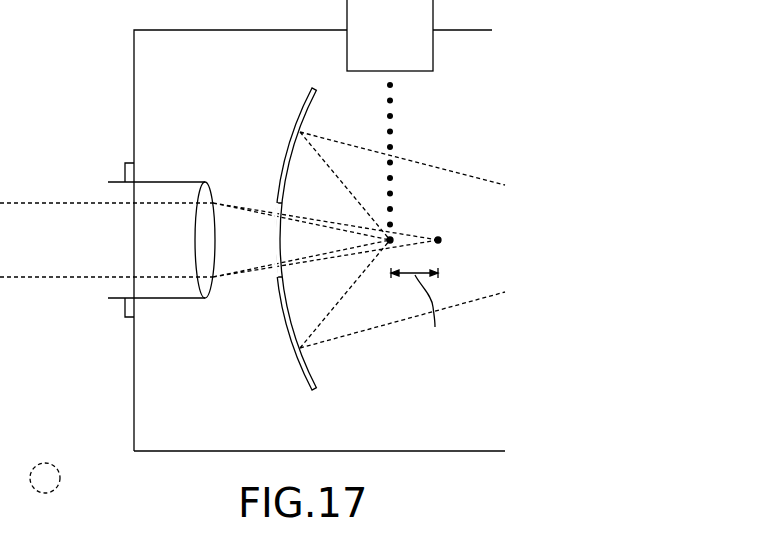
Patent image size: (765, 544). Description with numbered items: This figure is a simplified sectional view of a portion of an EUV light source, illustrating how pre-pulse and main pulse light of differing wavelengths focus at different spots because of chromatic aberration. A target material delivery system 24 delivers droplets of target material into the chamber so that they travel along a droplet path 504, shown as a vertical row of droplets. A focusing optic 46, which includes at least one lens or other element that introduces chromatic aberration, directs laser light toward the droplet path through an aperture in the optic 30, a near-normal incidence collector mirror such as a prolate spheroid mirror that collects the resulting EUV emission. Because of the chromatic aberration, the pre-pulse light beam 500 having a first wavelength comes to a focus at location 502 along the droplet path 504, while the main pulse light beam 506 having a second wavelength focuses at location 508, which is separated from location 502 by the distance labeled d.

The target material delivery system 24 is at (377, 41).
The focusing optic 46 is at (215, 190).
The pre-pulse light beam 500 is at (255, 270).
The focus location of pre-pulse light beam 502 is at (392, 238).
The droplet path 504 is at (392, 147).
The main pulse light beam 506 is at (418, 243).
The focus location of main pulse light beam 508 is at (441, 240).
The optic 30 is at (288, 342).